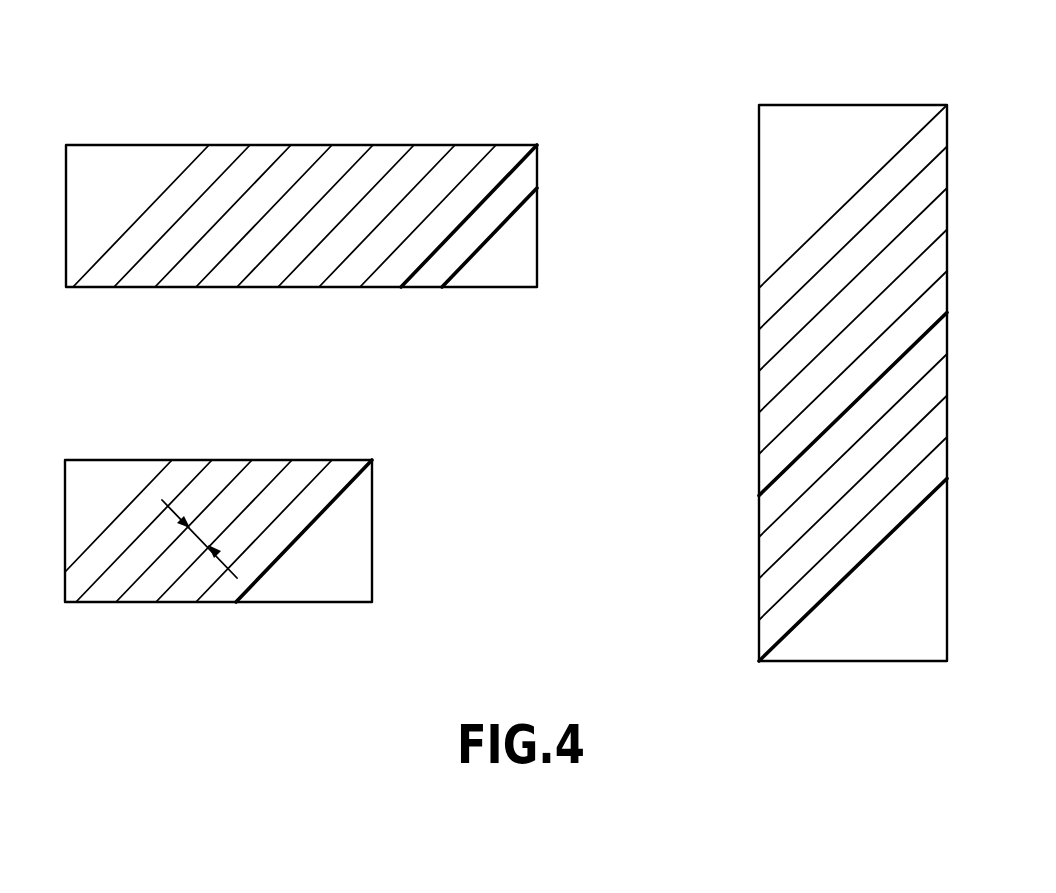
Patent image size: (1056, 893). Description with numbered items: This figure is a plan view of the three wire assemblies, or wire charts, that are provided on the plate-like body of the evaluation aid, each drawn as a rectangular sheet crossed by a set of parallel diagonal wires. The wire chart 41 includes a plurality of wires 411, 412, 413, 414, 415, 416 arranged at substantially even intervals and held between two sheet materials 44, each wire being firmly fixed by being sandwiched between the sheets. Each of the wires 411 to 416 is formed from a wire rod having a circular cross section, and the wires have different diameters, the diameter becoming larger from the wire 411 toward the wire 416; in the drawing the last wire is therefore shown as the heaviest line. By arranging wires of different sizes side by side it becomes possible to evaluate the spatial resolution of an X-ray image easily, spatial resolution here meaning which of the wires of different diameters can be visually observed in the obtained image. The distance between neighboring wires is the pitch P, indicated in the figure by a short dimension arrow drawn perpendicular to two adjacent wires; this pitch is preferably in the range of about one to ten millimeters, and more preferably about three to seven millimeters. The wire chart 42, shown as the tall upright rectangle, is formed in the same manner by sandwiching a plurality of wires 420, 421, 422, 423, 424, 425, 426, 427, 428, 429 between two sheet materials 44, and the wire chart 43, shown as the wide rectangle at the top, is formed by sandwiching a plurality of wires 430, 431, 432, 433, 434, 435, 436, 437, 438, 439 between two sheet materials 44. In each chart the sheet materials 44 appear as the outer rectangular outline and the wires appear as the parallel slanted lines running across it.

The wire chart 41 is at (447, 426).
The wire chart 42 is at (988, 93).
The wire chart 43 is at (580, 85).
The sheet material 44 is at (520, 265).
The pitch P is at (193, 533).
The wire 411 is at (155, 477).
The wire 412 is at (197, 477).
The wire 413 is at (235, 477).
The wire 414 is at (277, 477).
The wire 415 is at (317, 477).
The wire 416 is at (360, 470).
The wire 420 is at (805, 242).
The wire 421 is at (805, 285).
The wire 422 is at (928, 203).
The wire 423 is at (928, 244).
The wire 424 is at (928, 287).
The wire 425 is at (927, 329).
The wire 426 is at (927, 377).
The wire 427 is at (927, 418).
The wire 428 is at (927, 458).
The wire 429 is at (927, 502).
The wire 430 is at (193, 162).
The wire 431 is at (230, 162).
The wire 432 is at (273, 162).
The wire 433 is at (317, 162).
The wire 434 is at (357, 162).
The wire 435 is at (400, 162).
The wire 436 is at (433, 162).
The wire 437 is at (487, 166).
The wire 438 is at (520, 167).
The wire 439 is at (523, 208).